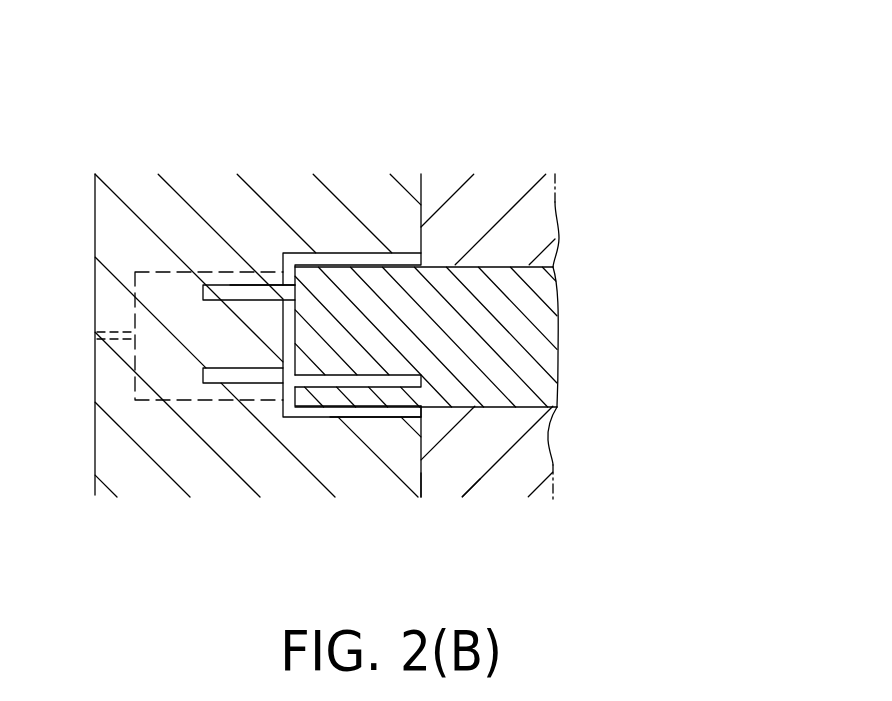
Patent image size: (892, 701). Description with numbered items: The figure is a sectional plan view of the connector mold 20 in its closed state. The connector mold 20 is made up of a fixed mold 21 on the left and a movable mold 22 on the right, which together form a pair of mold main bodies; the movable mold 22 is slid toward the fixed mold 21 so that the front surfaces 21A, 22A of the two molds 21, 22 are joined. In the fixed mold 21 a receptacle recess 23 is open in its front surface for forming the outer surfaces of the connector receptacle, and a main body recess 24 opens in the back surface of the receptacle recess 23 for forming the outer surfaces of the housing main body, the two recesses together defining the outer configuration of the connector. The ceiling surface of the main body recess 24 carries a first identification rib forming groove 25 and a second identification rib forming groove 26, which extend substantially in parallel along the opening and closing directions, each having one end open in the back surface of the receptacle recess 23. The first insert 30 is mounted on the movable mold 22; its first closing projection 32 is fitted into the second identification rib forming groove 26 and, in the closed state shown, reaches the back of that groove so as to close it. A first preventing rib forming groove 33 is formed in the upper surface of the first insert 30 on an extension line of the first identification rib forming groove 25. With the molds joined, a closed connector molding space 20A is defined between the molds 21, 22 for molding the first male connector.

The connector mold 20 is at (475, 87).
The fixed mold 21 is at (362, 164).
The movable mold 22 is at (468, 163).
The front surface of the fixed mold 21A is at (421, 473).
The front surface of the movable mold 22A is at (421, 488).
The first insert 30 is at (541, 362).
The connector molding space 20A is at (358, 418).
The receptacle recess 23 is at (394, 420).
The second identification rib forming groove 26 is at (220, 284).
The first closing projection 32 is at (248, 296).
The first identification rib forming groove 25 is at (242, 378).
The first preventing rib forming groove 33 is at (311, 381).
The main body recess 24 is at (147, 397).